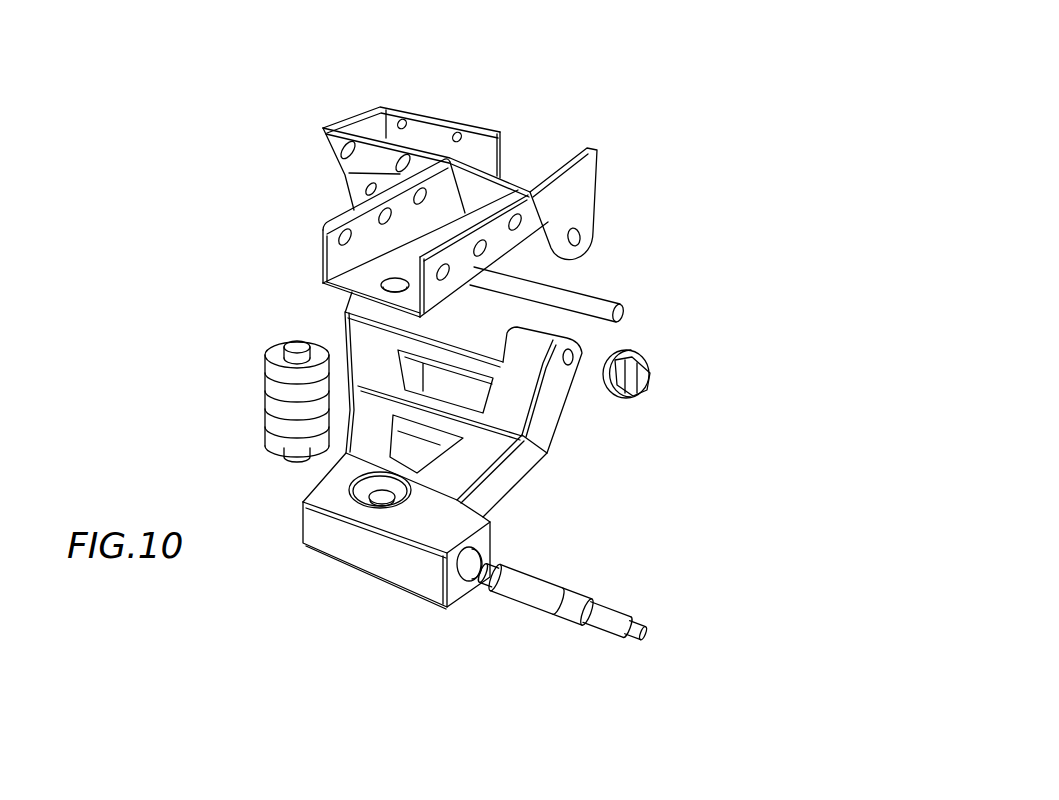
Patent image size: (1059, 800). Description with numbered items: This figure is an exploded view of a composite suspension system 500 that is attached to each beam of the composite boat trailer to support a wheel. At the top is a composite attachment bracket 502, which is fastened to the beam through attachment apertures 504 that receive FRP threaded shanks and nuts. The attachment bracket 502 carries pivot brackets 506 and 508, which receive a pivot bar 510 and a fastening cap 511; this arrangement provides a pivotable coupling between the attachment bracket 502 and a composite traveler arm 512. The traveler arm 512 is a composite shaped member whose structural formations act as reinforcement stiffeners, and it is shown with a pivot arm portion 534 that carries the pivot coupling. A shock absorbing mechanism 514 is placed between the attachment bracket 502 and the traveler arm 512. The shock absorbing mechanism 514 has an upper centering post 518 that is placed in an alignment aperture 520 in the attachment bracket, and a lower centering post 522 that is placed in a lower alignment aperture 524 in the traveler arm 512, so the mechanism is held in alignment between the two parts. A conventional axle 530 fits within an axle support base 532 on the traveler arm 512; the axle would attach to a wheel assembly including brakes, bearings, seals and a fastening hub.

The mounting assembly 500 is at (268, 240).
The composite attachment bracket 502 is at (478, 207).
The attachment apertures 504 is at (418, 192).
The pivot bracket 506 is at (576, 232).
The pivot bracket 508 is at (354, 191).
The pivot bar 510 is at (462, 340).
The fastening cap 511 is at (648, 379).
The composite traveler arm 512 is at (595, 308).
The shock absorbing mechanism 514 is at (262, 403).
The upper centering post 518 is at (297, 344).
The alignment aperture 520 is at (390, 272).
The lower centering post 522 is at (290, 461).
The lower alignment aperture 524 is at (386, 507).
The axle 530 is at (574, 608).
The axle support base 532 is at (467, 567).
The pivot arm 534 is at (572, 355).